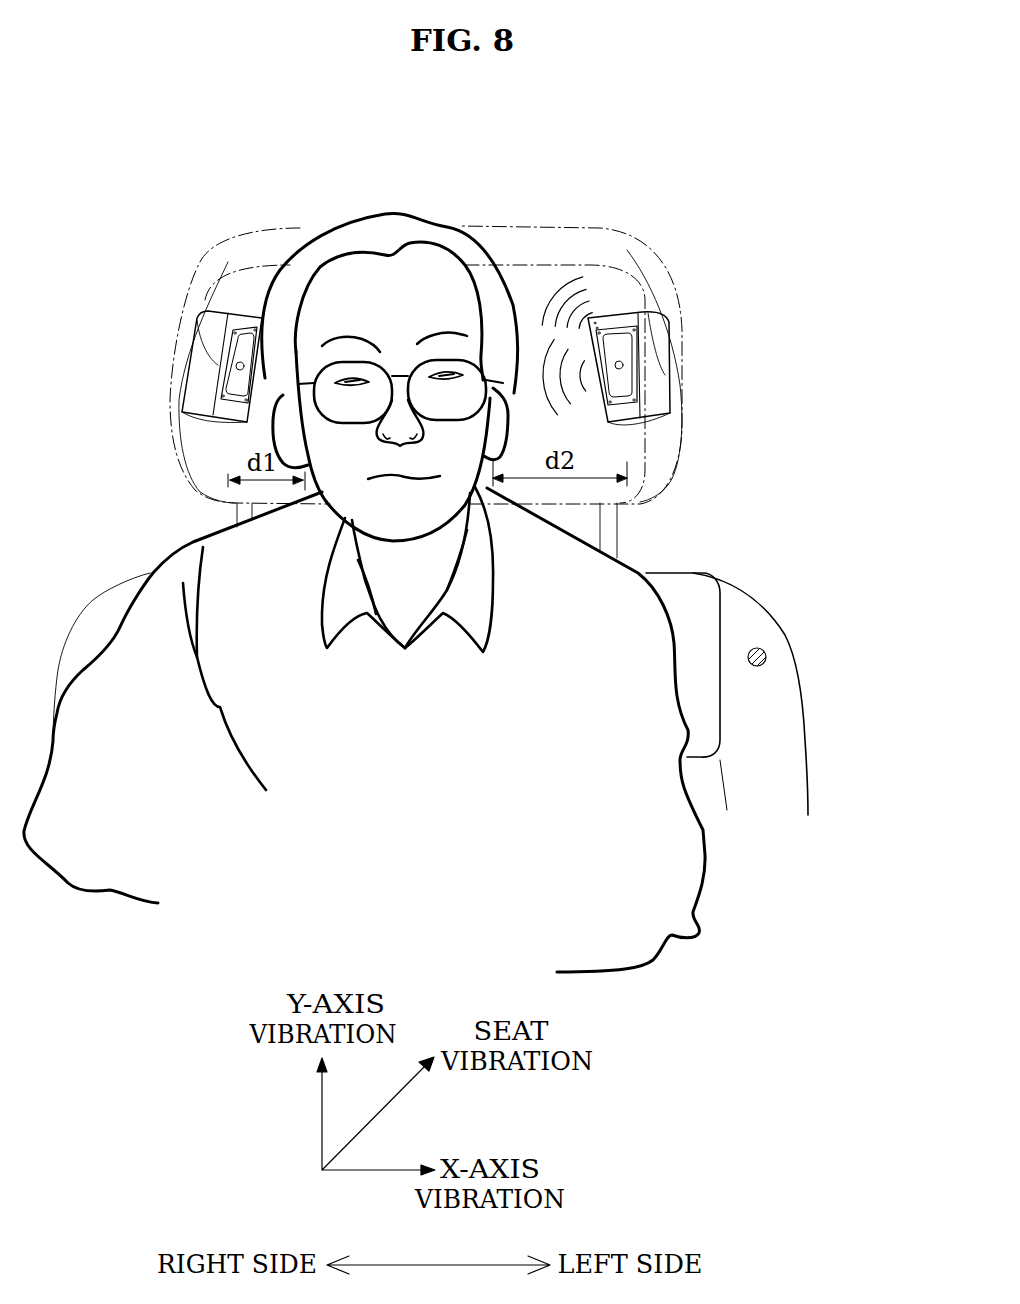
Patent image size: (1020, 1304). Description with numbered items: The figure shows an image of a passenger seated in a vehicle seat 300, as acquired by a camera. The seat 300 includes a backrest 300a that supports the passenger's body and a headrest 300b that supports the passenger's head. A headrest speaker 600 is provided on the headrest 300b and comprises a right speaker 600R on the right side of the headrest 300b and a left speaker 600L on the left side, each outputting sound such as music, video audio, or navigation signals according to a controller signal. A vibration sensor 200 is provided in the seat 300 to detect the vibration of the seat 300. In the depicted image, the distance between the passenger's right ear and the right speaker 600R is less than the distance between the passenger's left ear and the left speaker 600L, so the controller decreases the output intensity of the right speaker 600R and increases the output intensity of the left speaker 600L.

The headrest speaker 600 is at (426, 262).
The right speaker 600R is at (215, 325).
The left speaker 600L is at (606, 299).
The seat 300 is at (477, 520).
The backrest 300a is at (449, 671).
The headrest 300b is at (672, 465).
The vibration sensor 200 is at (764, 650).